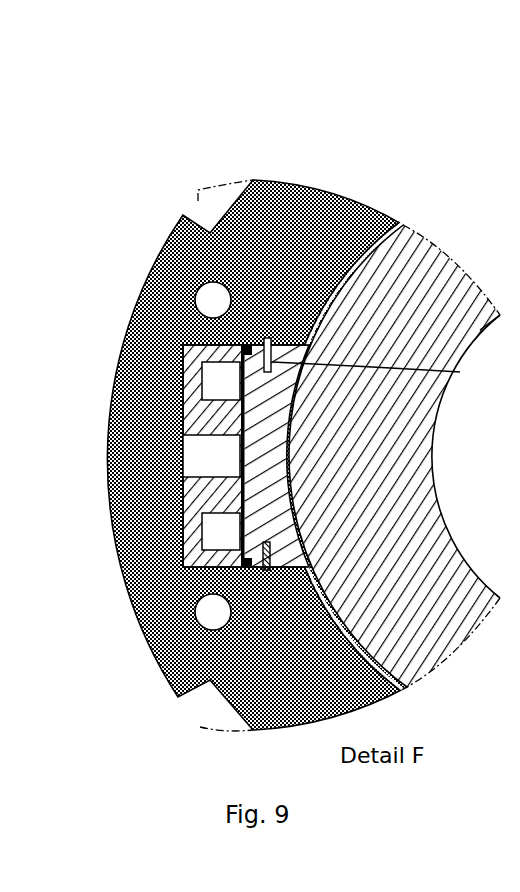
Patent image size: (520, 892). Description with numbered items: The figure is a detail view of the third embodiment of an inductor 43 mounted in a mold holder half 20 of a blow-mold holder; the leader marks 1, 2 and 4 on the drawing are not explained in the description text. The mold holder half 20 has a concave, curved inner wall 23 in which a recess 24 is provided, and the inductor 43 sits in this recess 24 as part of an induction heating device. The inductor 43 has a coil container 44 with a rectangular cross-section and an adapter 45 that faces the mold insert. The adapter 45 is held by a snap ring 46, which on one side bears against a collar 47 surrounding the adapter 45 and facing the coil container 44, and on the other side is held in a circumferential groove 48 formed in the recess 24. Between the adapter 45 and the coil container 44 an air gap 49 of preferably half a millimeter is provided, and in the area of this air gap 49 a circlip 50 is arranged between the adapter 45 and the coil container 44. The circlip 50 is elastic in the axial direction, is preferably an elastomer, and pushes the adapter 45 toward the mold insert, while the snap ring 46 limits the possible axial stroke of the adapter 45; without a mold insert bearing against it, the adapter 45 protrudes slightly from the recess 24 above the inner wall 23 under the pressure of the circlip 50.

The electric machine 1 is at (127, 455).
The rotor 2 is at (460, 243).
The stator yoke 4 is at (340, 617).
The mold holder half 20 is at (338, 168).
The inner wall 23 is at (335, 583).
The recess 24 is at (386, 374).
The inductor 43 is at (182, 511).
The coil container 44 is at (197, 413).
The adapter 45 is at (300, 480).
The snap ring 46 is at (362, 222).
The collar 47 is at (249, 346).
The circumferential groove 48 is at (265, 340).
The air gap 49 is at (240, 503).
The circlip 50 is at (247, 567).